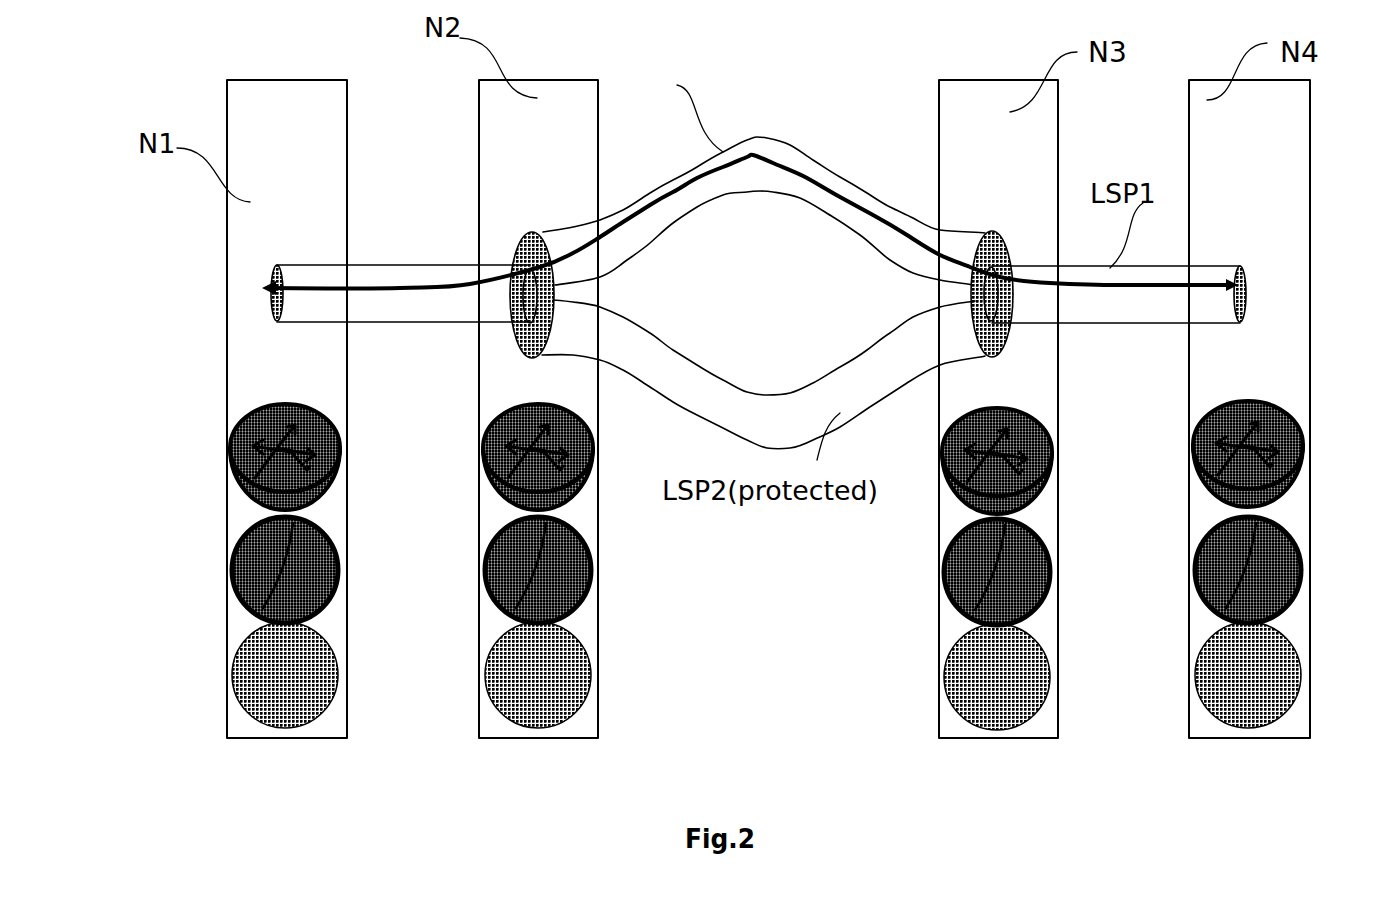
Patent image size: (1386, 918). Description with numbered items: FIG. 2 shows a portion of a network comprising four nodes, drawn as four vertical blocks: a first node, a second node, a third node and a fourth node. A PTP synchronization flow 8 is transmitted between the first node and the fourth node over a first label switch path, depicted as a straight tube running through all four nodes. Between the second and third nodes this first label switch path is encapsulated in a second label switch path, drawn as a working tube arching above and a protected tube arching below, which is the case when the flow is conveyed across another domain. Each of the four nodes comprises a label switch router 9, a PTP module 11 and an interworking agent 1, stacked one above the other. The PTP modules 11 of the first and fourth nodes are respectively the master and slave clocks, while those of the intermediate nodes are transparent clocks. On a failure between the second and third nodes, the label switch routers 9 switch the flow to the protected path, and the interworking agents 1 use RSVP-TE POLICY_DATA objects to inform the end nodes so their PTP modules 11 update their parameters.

The interworking agent 1 is at (500, 675).
The PTP synchronization flow 8 is at (823, 192).
The label switch router 9 is at (503, 443).
The PTP module 11 is at (483, 572).